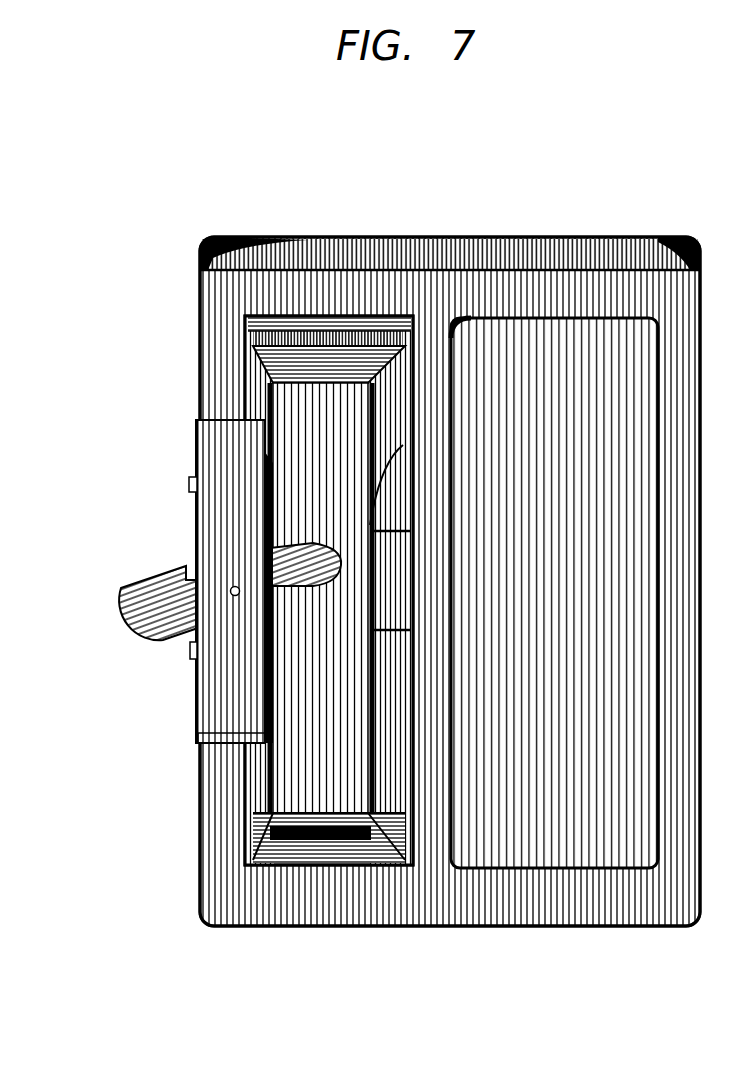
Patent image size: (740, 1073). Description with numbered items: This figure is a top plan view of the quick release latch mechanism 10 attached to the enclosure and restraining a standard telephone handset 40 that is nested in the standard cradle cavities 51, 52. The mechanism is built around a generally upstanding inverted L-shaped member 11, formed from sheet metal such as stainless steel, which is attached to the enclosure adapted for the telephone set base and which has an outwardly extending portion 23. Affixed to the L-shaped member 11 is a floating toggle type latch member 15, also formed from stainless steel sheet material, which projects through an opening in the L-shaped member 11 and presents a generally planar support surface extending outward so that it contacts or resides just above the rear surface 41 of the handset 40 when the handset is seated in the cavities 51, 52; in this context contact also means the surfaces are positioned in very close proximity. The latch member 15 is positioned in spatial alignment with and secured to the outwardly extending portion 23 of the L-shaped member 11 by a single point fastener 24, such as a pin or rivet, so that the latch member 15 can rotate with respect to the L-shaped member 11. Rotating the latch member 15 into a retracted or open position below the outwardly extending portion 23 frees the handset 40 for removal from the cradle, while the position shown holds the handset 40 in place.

The quick release latch mechanism 10 is at (190, 567).
The inverted L-shaped member 11 is at (191, 414).
The floating toggle type latch member 15 is at (142, 603).
The outwardly extending portion 23 is at (218, 722).
The single point fastener 24 is at (225, 579).
The telephone handset 40 is at (284, 556).
The rear surface 41 is at (300, 776).
The cavity 51 is at (372, 822).
The cavity 52 is at (376, 328).